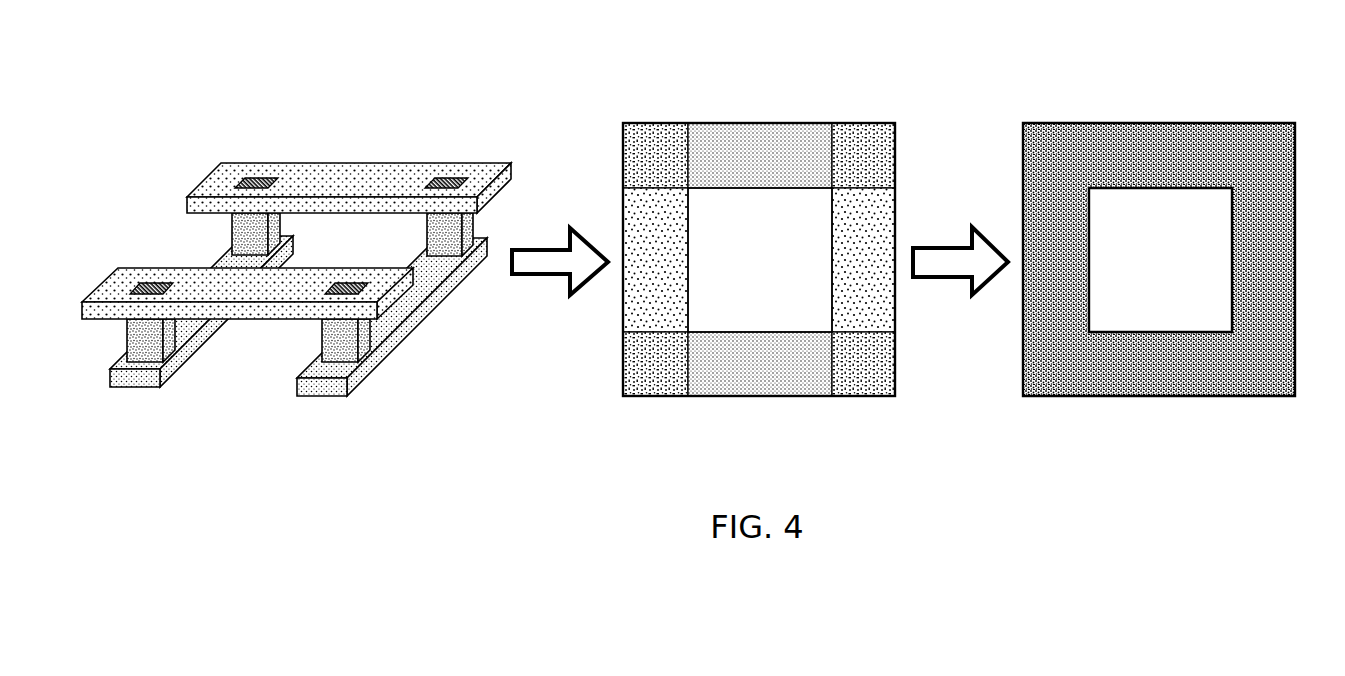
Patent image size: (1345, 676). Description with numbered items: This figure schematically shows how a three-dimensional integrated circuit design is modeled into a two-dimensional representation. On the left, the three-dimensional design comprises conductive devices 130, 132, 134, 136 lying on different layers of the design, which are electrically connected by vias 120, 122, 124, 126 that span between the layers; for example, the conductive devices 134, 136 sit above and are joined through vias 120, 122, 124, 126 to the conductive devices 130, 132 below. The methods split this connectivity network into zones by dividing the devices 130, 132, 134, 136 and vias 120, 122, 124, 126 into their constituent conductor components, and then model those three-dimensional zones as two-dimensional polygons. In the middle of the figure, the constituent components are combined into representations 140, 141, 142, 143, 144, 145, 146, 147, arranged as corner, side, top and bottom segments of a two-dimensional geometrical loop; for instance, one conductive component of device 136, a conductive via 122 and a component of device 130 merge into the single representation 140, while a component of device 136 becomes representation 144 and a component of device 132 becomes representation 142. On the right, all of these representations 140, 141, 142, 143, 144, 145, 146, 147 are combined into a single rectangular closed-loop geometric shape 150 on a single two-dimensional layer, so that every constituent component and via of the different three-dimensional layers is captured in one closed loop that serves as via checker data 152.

The via 120 is at (232, 234).
The conductive via 122 is at (127, 340).
The via 124 is at (473, 224).
The via 126 is at (370, 337).
The conductive device 130 is at (133, 388).
The conductive device 132 is at (440, 300).
The conductive device 134 is at (364, 163).
The conductive device 136 is at (103, 283).
The representation 140 is at (650, 396).
The representation 141 is at (623, 210).
The representation 142 is at (758, 396).
The representation 143 is at (660, 123).
The representation 144 is at (895, 208).
The representation 145 is at (758, 123).
The representation 146 is at (862, 123).
The representation 147 is at (868, 396).
The closed-loop geometric shape 150 is at (1158, 123).
The via checker data 152 is at (1183, 212).